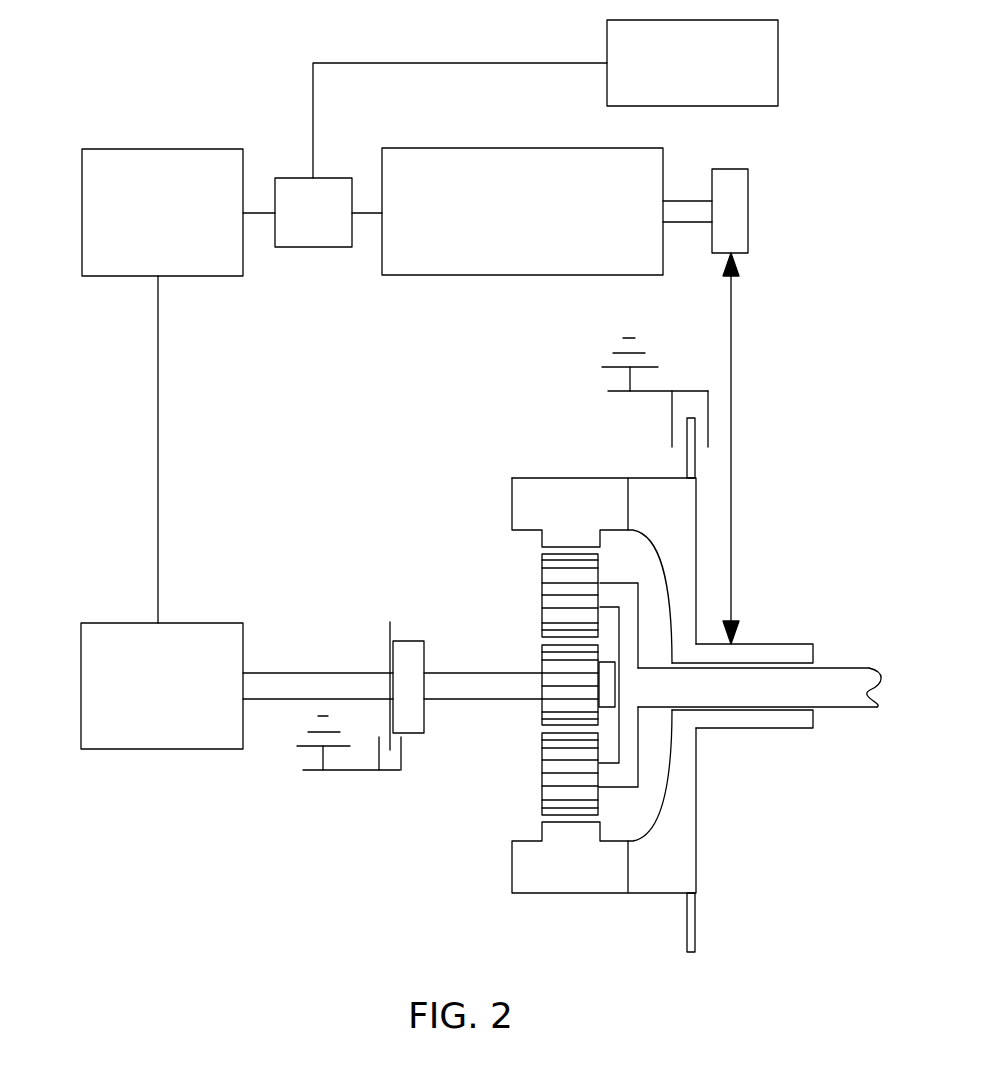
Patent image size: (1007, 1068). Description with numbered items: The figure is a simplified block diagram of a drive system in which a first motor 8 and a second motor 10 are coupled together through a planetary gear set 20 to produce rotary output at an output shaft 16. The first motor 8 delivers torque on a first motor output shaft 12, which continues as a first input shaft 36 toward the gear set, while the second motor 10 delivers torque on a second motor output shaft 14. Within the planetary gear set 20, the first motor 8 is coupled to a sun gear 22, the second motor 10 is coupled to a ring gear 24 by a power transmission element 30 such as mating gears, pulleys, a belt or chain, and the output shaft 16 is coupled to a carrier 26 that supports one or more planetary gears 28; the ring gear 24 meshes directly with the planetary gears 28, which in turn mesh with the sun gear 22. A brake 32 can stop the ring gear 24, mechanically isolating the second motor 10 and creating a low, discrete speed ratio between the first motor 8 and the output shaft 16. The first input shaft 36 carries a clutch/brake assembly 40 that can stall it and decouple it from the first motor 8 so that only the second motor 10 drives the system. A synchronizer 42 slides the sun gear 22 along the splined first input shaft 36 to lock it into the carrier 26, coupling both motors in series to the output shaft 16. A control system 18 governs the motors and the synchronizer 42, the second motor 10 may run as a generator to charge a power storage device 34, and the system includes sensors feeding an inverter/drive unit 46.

The first motor 8 is at (100, 688).
The second motor 10 is at (448, 173).
The first motor output shaft 12 is at (305, 688).
The second motor output shaft 14 is at (691, 208).
The output shaft 16 is at (845, 680).
The control system 18 is at (175, 167).
The planetary gear set 20 is at (618, 645).
The sun gear 22 is at (540, 703).
The ring gear 24 is at (558, 497).
The carrier 26 is at (628, 772).
The planetary gears 28 is at (543, 582).
The power transmission element 30 is at (733, 452).
The brake 32 is at (671, 403).
The power storage device 34 is at (755, 65).
The first input shaft 36 is at (490, 688).
The clutch/brake assembly 40 is at (410, 657).
The synchronizer 42 is at (610, 692).
The inverter/drive unit 46 is at (312, 230).